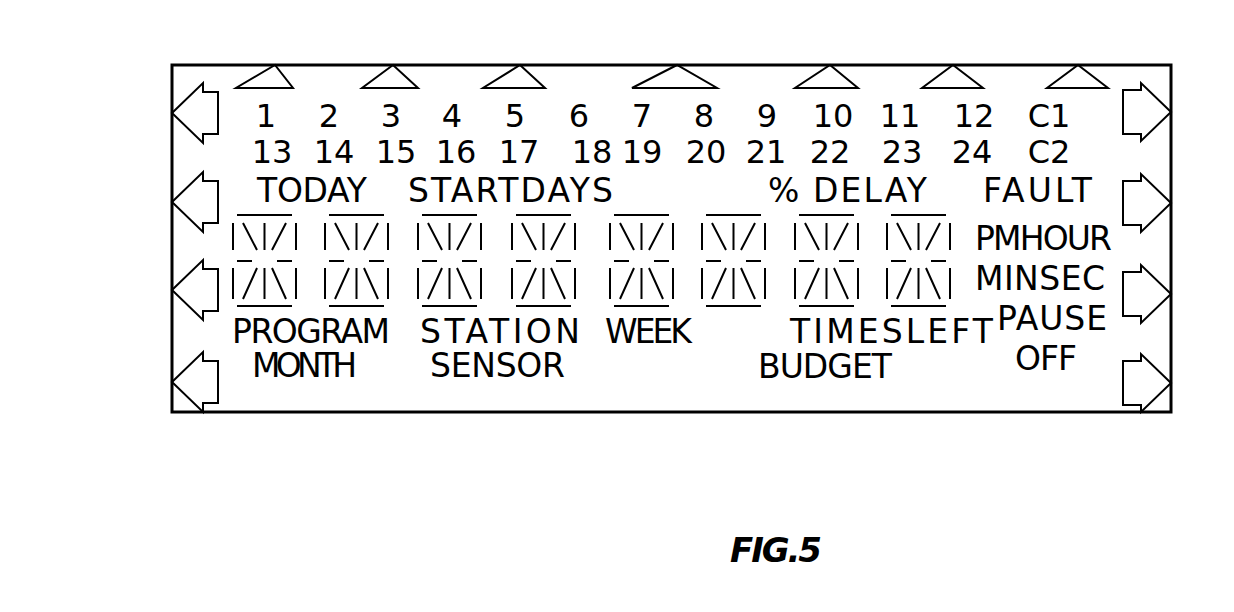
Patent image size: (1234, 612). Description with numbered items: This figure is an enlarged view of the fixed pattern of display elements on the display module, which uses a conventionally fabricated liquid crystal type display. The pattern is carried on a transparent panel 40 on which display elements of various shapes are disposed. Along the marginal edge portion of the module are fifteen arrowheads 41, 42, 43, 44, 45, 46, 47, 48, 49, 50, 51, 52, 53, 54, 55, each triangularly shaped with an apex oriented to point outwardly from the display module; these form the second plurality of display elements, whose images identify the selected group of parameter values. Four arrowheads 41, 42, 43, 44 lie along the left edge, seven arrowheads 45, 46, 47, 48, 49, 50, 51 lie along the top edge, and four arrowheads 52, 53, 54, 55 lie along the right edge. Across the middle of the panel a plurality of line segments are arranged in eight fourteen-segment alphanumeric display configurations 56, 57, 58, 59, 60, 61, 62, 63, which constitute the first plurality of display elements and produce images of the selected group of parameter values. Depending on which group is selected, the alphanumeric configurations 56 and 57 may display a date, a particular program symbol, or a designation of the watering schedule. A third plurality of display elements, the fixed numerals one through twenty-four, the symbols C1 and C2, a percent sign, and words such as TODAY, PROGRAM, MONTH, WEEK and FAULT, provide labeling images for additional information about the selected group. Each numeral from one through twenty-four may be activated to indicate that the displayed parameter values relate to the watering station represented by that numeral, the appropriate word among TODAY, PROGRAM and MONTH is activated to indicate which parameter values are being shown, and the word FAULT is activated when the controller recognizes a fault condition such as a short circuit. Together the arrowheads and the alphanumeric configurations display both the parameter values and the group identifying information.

The transparent panel 40 is at (449, 413).
The arrowhead 41 is at (182, 379).
The arrowhead 42 is at (181, 286).
The arrowhead 43 is at (180, 197).
The arrowhead 44 is at (182, 101).
The arrowhead 45 is at (270, 71).
The arrowhead 46 is at (393, 68).
The arrowhead 47 is at (517, 73).
The arrowhead 48 is at (680, 73).
The arrowhead 49 is at (833, 66).
The arrowhead 50 is at (948, 67).
The arrowhead 51 is at (1071, 68).
The arrowhead 52 is at (1157, 118).
The arrowhead 53 is at (1153, 193).
The arrowhead 54 is at (1157, 302).
The arrowhead 55 is at (1153, 400).
The fourteen-segment alphanumeric display configuration 56 is at (233, 241).
The fourteen-segment alphanumeric display configuration 57 is at (391, 266).
The fourteen-segment alphanumeric display configuration 58 is at (418, 270).
The fourteen-segment alphanumeric display configuration 59 is at (588, 253).
The fourteen-segment alphanumeric display configuration 60 is at (679, 222).
The fourteen-segment alphanumeric display configuration 61 is at (737, 222).
The fourteen-segment alphanumeric display configuration 62 is at (795, 262).
The fourteen-segment alphanumeric display configuration 63 is at (887, 247).